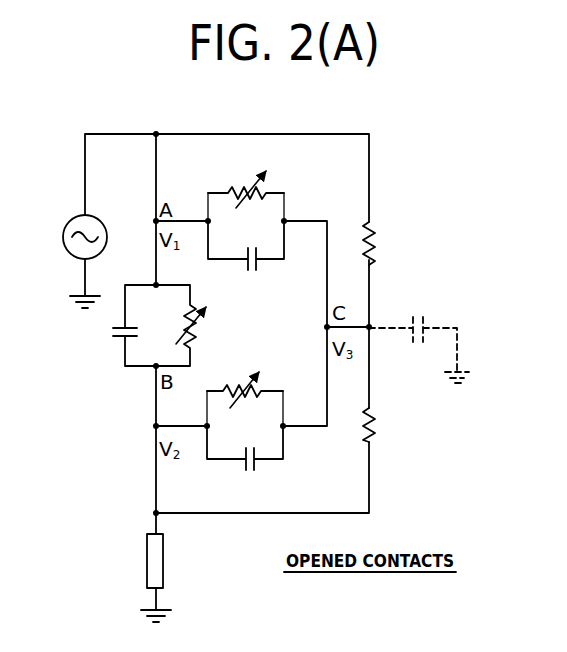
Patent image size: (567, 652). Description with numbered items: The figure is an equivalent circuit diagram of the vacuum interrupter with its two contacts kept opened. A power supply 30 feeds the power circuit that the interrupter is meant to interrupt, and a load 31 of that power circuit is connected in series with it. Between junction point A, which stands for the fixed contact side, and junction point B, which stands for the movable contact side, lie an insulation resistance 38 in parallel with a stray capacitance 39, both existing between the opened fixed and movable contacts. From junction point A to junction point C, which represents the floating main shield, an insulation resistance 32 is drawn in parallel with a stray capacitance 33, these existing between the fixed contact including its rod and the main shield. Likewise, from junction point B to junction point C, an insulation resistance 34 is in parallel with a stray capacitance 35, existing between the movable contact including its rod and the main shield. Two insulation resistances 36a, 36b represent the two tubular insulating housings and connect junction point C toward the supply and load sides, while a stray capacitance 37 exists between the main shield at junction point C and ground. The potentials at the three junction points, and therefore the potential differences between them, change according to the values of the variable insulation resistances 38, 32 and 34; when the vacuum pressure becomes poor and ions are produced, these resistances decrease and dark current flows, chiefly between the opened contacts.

The power supply 30 is at (70, 219).
The load 31 is at (166, 566).
The insulation resistance 32 is at (266, 173).
The stray capacitance 33 is at (256, 271).
The insulation resistance 34 is at (255, 375).
The stray capacitance 35 is at (247, 473).
The insulation resistance 36a is at (376, 232).
The insulation resistance 36b is at (372, 426).
The stray capacitance 37 is at (418, 317).
The insulation resistance 38 is at (198, 331).
The stray capacitance 39 is at (112, 332).